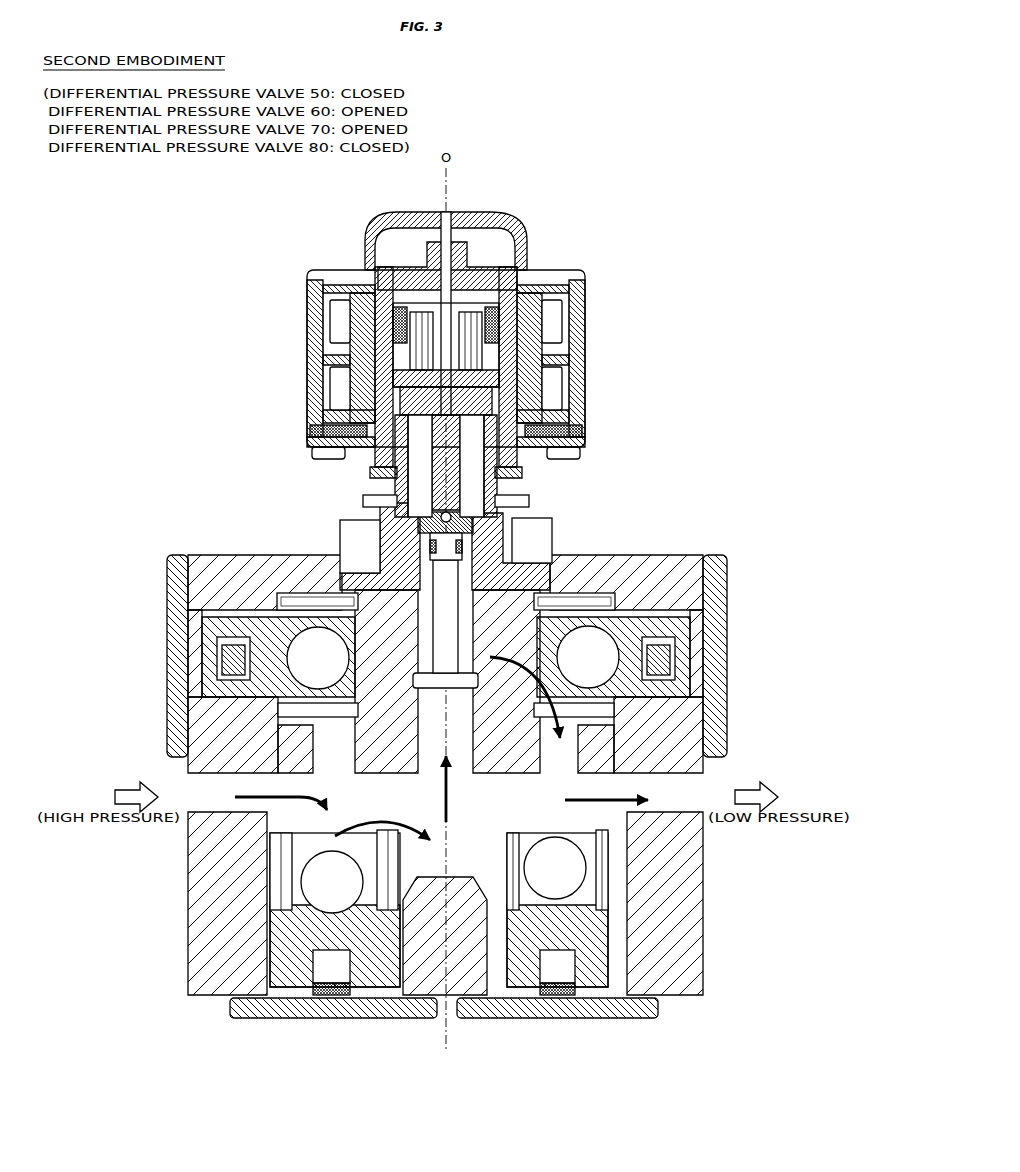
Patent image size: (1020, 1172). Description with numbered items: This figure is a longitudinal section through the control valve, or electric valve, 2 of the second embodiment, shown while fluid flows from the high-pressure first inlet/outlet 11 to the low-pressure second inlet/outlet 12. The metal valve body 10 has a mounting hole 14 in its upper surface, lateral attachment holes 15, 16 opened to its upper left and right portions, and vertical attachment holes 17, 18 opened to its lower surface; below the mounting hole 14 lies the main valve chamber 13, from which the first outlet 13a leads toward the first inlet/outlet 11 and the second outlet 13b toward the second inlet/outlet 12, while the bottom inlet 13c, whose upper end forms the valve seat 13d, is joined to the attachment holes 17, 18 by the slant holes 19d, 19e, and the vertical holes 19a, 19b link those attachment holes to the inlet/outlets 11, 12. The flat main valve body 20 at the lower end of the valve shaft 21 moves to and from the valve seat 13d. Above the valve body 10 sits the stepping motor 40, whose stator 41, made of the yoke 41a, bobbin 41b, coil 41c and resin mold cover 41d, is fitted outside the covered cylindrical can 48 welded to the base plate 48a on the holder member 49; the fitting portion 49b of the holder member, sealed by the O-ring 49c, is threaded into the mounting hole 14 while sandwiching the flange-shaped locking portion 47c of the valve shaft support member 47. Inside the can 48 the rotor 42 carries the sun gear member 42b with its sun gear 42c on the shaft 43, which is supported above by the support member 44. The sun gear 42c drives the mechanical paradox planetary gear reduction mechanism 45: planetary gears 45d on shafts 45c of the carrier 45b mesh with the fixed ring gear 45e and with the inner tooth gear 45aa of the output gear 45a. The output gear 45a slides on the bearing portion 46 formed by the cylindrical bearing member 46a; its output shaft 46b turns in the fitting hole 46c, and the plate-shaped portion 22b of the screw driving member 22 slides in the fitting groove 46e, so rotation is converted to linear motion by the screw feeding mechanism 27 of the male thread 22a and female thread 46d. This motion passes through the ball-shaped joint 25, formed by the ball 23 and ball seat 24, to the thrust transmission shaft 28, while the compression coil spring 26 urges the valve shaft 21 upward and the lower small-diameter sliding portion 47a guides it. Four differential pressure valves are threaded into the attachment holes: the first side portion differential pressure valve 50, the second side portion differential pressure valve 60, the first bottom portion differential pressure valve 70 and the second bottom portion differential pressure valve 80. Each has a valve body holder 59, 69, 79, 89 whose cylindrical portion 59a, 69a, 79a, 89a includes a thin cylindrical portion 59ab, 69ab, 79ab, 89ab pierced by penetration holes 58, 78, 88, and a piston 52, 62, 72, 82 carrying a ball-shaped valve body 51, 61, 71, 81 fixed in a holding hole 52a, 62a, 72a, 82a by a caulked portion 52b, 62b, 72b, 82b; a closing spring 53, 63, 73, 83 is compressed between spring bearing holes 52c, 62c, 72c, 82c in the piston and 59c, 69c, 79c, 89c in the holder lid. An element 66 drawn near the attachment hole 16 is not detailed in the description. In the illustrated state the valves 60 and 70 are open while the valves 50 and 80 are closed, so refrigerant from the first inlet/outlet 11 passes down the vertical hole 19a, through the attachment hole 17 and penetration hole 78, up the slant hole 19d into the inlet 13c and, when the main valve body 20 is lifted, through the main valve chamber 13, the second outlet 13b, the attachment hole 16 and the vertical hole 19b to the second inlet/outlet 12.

The control valve (electric valve) 2 is at (662, 187).
The valve body 10 is at (225, 556).
The first inlet/outlet 11 is at (192, 782).
The second inlet/outlet 12 is at (705, 782).
The main valve chamber 13 is at (497, 655).
The first outlet (first side portion opening) 13a is at (340, 712).
The second outlet (second side portion opening) 13b is at (485, 702).
The inlet (bottom portion opening) 13c is at (478, 755).
The valve seat 13d is at (422, 698).
The mounting hole 14 is at (382, 595).
The attachment hole 15 is at (302, 592).
The attachment hole 16 is at (590, 602).
The attachment hole 17 is at (302, 837).
The attachment hole 18 is at (612, 837).
The vertical hole 19a is at (430, 784).
The vertical hole 19b is at (464, 806).
The slant hole 19d is at (378, 812).
The slant hole 19e is at (520, 838).
The main valve body 20 is at (452, 732).
The valve shaft 21 is at (475, 530).
The screw driving member (driver) 22 is at (392, 478).
The male thread 22a is at (500, 467).
The plate-shaped portion 22b is at (540, 456).
The ball 23 is at (362, 500).
The ball seat 24 is at (348, 552).
The ball-shaped joint 25 is at (350, 540).
The compression coil spring 26 is at (392, 580).
The screw feeding mechanism 27 is at (370, 470).
The thrust transmission shaft 28 is at (475, 516).
The stepping motor 40 is at (568, 278).
The stator 41 is at (318, 272).
The yoke 41a is at (332, 308).
The bobbin 41b is at (322, 346).
The coil 41c is at (352, 320).
The resin mold cover 41d is at (330, 290).
The rotor 42 is at (478, 272).
The sun gear member 42b is at (480, 258).
The sun gear 42c is at (518, 310).
The shaft 43 is at (437, 213).
The support member 44 is at (451, 213).
The mechanical paradox planetary gear reduction mechanism 45 is at (494, 402).
The output gear 45a is at (482, 384).
The inner tooth gear 45aa is at (490, 356).
The carrier 45b is at (470, 370).
The shaft 45c is at (500, 326).
The planetary gears 45d is at (495, 340).
The ring gear (inner tooth fixed gear) 45e is at (520, 302).
The sleeve 46 is at (372, 453).
The bearing member 46a is at (523, 470).
The output shaft 46b is at (583, 431).
The fitting hole 46c is at (311, 452).
The female thread 46d is at (512, 492).
The fitting groove 46e is at (298, 465).
The valve shaft support member 47 is at (515, 572).
The lower small-diameter sliding portion 47a is at (412, 656).
The flange-shaped locking portion 47c is at (468, 550).
The can 48 is at (405, 242).
The base plate 48a is at (520, 482).
The holder member 49 is at (512, 508).
The fitting portion 49b is at (309, 431).
The O-ring 49c is at (425, 563).
The first side portion differential pressure valve 50 is at (162, 578).
The valve body (differential pressure valve body) 51 is at (202, 690).
The piston 52 is at (242, 618).
The holding hole 52a is at (266, 590).
The caulked portion 52b is at (281, 793).
The spring bearing hole 52c is at (226, 668).
The closing spring 53 is at (216, 642).
The penetration holes 58 is at (332, 562).
The valve body holder 59 is at (196, 602).
The cylindrical portion 59a is at (196, 731).
The thin cylindrical portion 59ab is at (333, 732).
The spring bearing hole 59c is at (220, 655).
The second side portion differential pressure valve 60 is at (732, 580).
The valve body 61 is at (690, 690).
The piston 62 is at (662, 640).
The holding hole 62a is at (630, 588).
The caulked portion 62b is at (606, 801).
The spring bearing hole 62c is at (676, 668).
The closing spring 63 is at (676, 642).
The seal 66 is at (562, 596).
The valve body holder 69 is at (700, 603).
The cylindrical portion 69a is at (700, 731).
The thin cylindrical portion 69ab is at (558, 748).
The spring bearing hole 69c is at (672, 655).
The first bottom portion differential pressure valve 70 is at (252, 1030).
The valve body 71 is at (366, 1008).
The piston 72 is at (300, 942).
The holding hole 72a is at (300, 906).
The caulked portion 72b is at (406, 888).
The spring bearing hole 72c is at (345, 997).
The closing spring 73 is at (320, 1000).
The penetration hole 78 is at (296, 872).
The valve body holder 79 is at (300, 1019).
The cylindrical portion 79a is at (395, 1008).
The thin cylindrical portion 79ab is at (290, 852).
The spring bearing hole 79c is at (330, 1012).
The second bottom portion differential pressure valve 80 is at (640, 1030).
The valve body 81 is at (515, 1002).
The piston 82 is at (606, 942).
The holding hole 82a is at (606, 906).
The caulked portion 82b is at (612, 801).
The spring bearing hole 82c is at (542, 997).
The closing spring 83 is at (580, 1000).
The penetration holes 88 is at (610, 872).
The valve body holder 89 is at (600, 1019).
The cylindrical portion 89a is at (470, 1012).
The thin cylindrical portion 89ab is at (620, 852).
The spring bearing hole 89c is at (560, 1012).